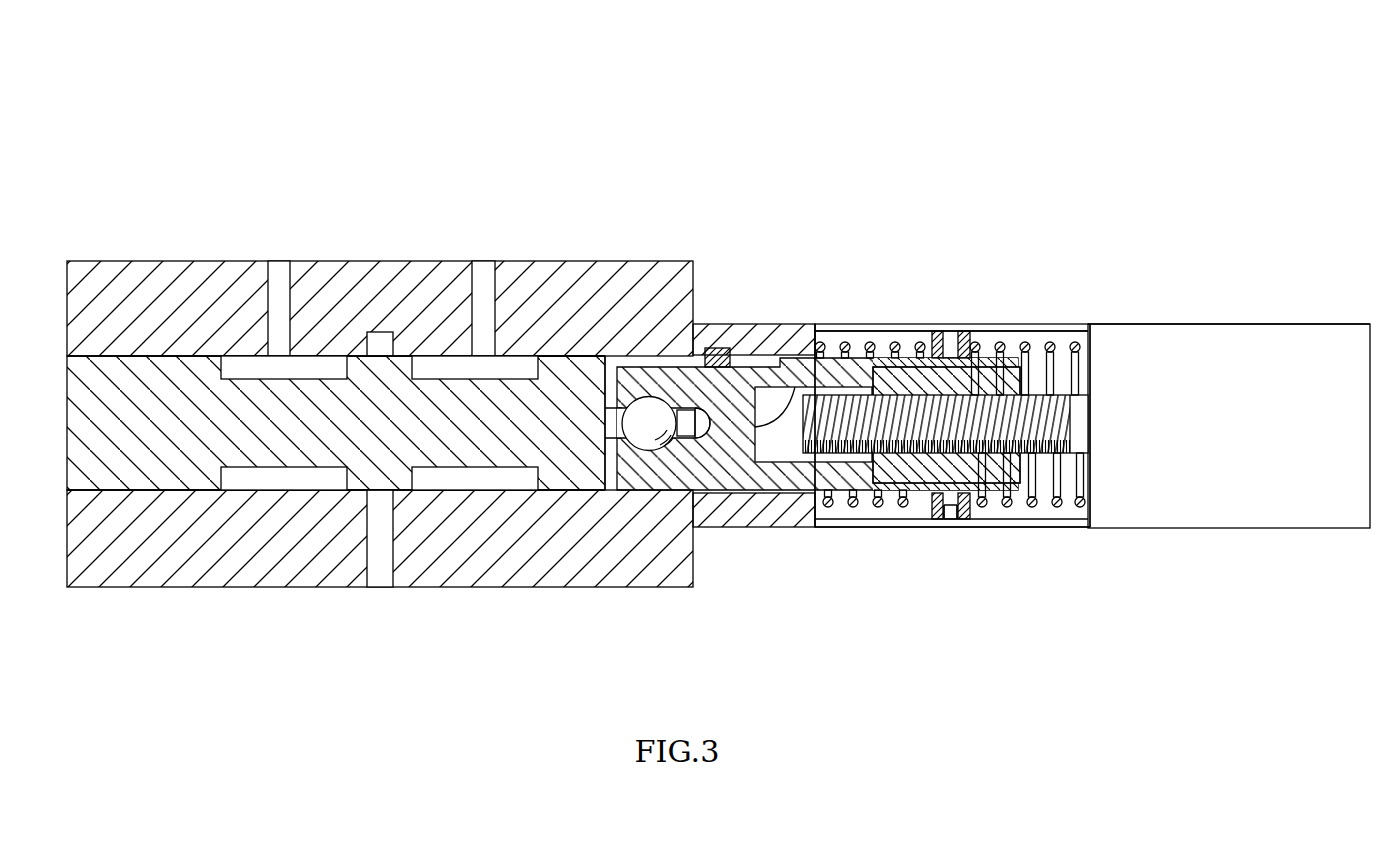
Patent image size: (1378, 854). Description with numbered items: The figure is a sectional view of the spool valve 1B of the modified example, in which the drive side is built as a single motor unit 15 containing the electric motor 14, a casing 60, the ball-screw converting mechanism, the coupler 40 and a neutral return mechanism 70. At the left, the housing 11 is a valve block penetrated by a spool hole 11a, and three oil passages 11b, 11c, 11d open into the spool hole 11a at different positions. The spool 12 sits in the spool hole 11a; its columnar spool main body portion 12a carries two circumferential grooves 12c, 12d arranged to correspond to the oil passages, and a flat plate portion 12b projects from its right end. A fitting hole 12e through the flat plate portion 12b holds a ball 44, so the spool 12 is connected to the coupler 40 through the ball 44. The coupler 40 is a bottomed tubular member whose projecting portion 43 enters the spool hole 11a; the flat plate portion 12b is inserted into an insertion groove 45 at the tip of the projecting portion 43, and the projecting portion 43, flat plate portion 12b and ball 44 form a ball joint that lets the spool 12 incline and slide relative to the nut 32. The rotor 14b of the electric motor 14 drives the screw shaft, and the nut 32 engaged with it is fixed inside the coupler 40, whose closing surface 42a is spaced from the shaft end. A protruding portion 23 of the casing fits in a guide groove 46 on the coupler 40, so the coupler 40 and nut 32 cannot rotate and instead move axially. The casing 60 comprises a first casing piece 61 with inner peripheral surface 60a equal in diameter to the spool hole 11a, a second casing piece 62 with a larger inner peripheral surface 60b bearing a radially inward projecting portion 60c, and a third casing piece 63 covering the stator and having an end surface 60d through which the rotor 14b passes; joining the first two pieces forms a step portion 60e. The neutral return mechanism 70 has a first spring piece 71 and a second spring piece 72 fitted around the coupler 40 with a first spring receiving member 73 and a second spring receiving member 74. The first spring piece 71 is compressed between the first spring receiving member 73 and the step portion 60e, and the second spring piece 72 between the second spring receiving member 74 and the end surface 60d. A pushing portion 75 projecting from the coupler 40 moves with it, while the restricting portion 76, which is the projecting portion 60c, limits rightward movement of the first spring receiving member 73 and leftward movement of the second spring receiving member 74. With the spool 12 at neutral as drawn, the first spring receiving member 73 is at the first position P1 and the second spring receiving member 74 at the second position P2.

The spool valve 1B is at (1199, 110).
The housing 11 is at (175, 283).
The spool hole 11a is at (162, 480).
The oil passage 11b is at (268, 312).
The oil passage 11c is at (374, 535).
The oil passage 11d is at (478, 310).
The spool 12 is at (95, 392).
The spool main body portion 12a is at (566, 368).
The flat plate portion 12b is at (685, 407).
The circumferential groove 12c is at (287, 462).
The circumferential groove 12d is at (480, 460).
The fitting hole 12e is at (645, 397).
The electric motor 14 is at (1277, 320).
The rotor 14b is at (1083, 423).
The motor unit 15 is at (1094, 150).
The protruding portion 23 is at (711, 348).
The nut 32 is at (1007, 382).
The coupler 40 is at (797, 387).
The surface 42a is at (740, 420).
The projecting portion 43 is at (647, 423).
The ball 44 is at (684, 440).
The insertion groove 45 is at (699, 447).
The guide groove 46 is at (743, 326).
The casing 60 is at (842, 312).
The inner peripheral surface 60a is at (745, 492).
The inner peripheral surface 60b is at (870, 527).
The projecting portion 60c is at (953, 527).
The end surface 60d is at (1076, 527).
The step portion 60e is at (826, 527).
The first casing piece 61 is at (724, 328).
The second casing piece 62 is at (884, 332).
The third casing piece 63 is at (1223, 324).
The neutral return mechanism 70 is at (950, 305).
The first spring piece 71 is at (870, 325).
The second spring piece 72 is at (1049, 343).
The first spring receiving member 73 is at (937, 331).
The second spring receiving member 74 is at (964, 335).
The pushing portion 75 is at (950, 356).
The restricting portion 76 is at (953, 611).
The first position P1 is at (935, 530).
The second position P2 is at (963, 530).